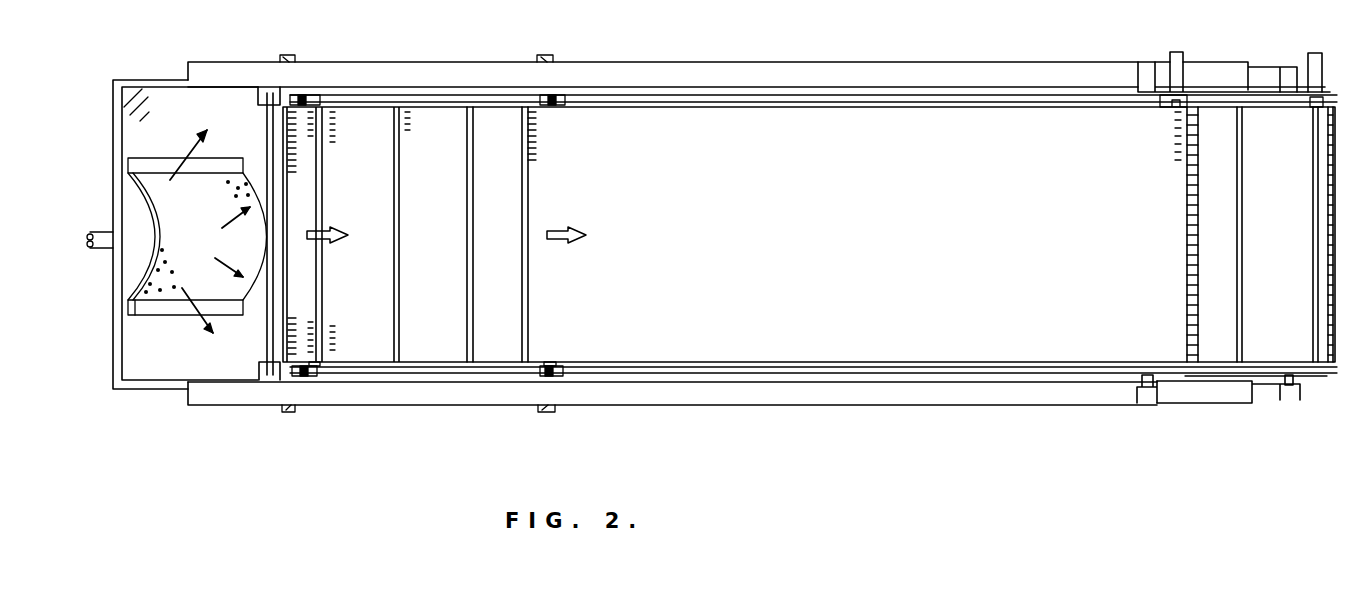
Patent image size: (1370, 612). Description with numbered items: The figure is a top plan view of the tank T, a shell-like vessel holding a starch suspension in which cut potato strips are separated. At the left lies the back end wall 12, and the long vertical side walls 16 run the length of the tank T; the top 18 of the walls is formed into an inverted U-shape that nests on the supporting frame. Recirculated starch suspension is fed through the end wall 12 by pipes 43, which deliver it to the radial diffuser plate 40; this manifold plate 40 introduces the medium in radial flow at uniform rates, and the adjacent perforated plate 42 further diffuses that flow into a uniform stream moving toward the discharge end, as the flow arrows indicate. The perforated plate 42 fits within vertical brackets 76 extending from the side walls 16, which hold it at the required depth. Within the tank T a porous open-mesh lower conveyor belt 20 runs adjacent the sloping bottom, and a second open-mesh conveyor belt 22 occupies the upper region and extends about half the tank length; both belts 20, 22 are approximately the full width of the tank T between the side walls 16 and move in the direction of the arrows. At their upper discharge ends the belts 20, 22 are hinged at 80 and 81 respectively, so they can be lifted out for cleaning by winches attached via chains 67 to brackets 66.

The end wall 12 is at (113, 345).
The side walls 16 is at (770, 87).
The top of the walls 18 is at (967, 64).
The conveyor belt 20 is at (374, 280).
The second conveyor belt 22 is at (686, 260).
The radial diffuser plate 40 is at (155, 194).
The perforated plate 42 is at (268, 345).
The pipes 43 is at (95, 250).
The brackets 66 is at (312, 374).
The chains 67 is at (300, 100).
The vertical brackets 76 is at (262, 380).
The pivot 80 is at (1288, 88).
The pivot 81 is at (1145, 90).
The tank T is at (692, 88).